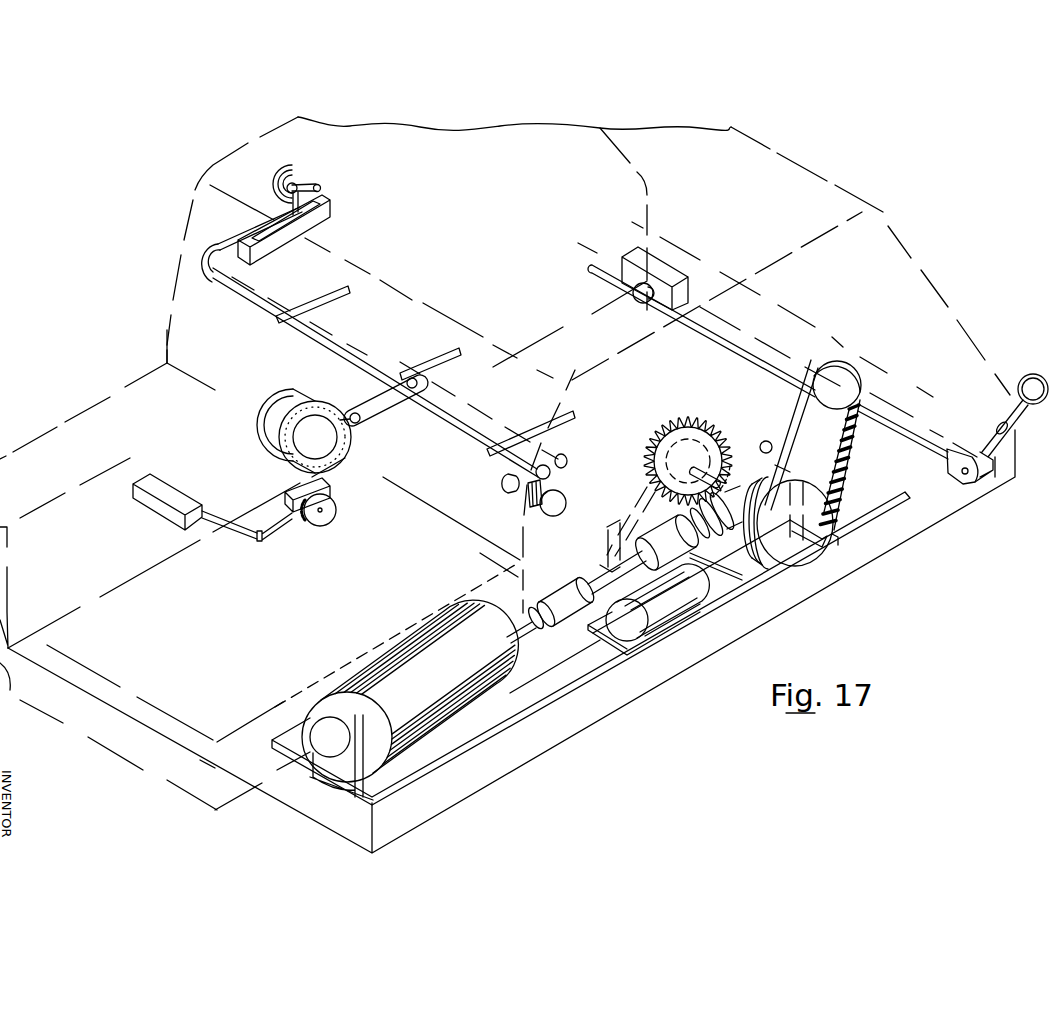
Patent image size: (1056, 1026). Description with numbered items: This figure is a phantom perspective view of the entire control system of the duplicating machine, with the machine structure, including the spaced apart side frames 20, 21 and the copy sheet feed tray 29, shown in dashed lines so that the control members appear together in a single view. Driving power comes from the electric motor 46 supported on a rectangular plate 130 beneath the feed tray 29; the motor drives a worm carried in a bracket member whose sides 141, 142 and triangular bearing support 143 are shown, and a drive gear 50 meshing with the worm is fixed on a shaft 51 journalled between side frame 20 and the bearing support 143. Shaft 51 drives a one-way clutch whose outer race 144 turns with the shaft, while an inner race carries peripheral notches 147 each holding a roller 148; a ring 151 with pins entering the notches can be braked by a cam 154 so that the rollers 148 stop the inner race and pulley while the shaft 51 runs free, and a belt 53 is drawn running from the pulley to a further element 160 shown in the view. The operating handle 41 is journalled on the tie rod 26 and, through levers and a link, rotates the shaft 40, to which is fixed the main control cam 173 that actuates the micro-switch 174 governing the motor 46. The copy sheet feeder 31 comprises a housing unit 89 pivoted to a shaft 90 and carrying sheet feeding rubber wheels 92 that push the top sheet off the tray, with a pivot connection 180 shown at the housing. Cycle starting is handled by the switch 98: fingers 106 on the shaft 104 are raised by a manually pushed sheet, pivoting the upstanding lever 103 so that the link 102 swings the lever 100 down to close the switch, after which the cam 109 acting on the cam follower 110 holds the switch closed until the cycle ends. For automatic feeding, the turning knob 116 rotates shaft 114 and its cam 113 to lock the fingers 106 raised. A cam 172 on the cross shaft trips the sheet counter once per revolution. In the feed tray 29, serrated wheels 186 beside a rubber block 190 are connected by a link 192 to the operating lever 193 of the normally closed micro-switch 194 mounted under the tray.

The side frame 20 is at (630, 402).
The side frame 21 is at (448, 212).
The tie rod 26 is at (907, 379).
The copy sheet feed tray 29 is at (192, 634).
The copy sheet feeder 31 is at (261, 404).
The shaft 40 is at (713, 340).
The operating handle 41 is at (1031, 375).
The electric motor 46 is at (475, 685).
The drive gear 50 is at (705, 424).
The shaft 51 is at (830, 546).
The belt 53 is at (847, 452).
The housing unit 89 is at (402, 395).
The shaft 90 is at (490, 411).
The sheet feeding rubber wheels 92 is at (347, 452).
The switch 98 is at (268, 250).
The lever 100 is at (320, 187).
The link 102 is at (256, 226).
The upstanding lever 103 is at (198, 282).
The shaft 104 is at (498, 457).
The fingers 106 is at (323, 293).
The cam 109 is at (303, 180).
The cam follower 110 is at (297, 228).
The cam 113 is at (508, 485).
The shaft 114 is at (528, 493).
The turning knob 116 is at (558, 498).
The rectangular plate 130 is at (560, 673).
The side 141 is at (776, 468).
The side 142 is at (606, 538).
The triangular bearing support 143 is at (640, 487).
The outer race 144 is at (806, 558).
The peripheral notches 147 is at (723, 538).
The roller 148 is at (767, 560).
The ring 151 is at (748, 462).
The cam 154 is at (767, 441).
The motor 160 is at (639, 628).
The cam 172 is at (292, 176).
The cam 173 is at (645, 303).
The micro-switch 174 is at (636, 254).
The pin 180 is at (375, 415).
The serrated wheels 186 is at (330, 516).
The rubber block 190 is at (325, 489).
The link 192 is at (278, 523).
The operating lever 193 is at (237, 536).
The micro-switch 194 is at (166, 484).